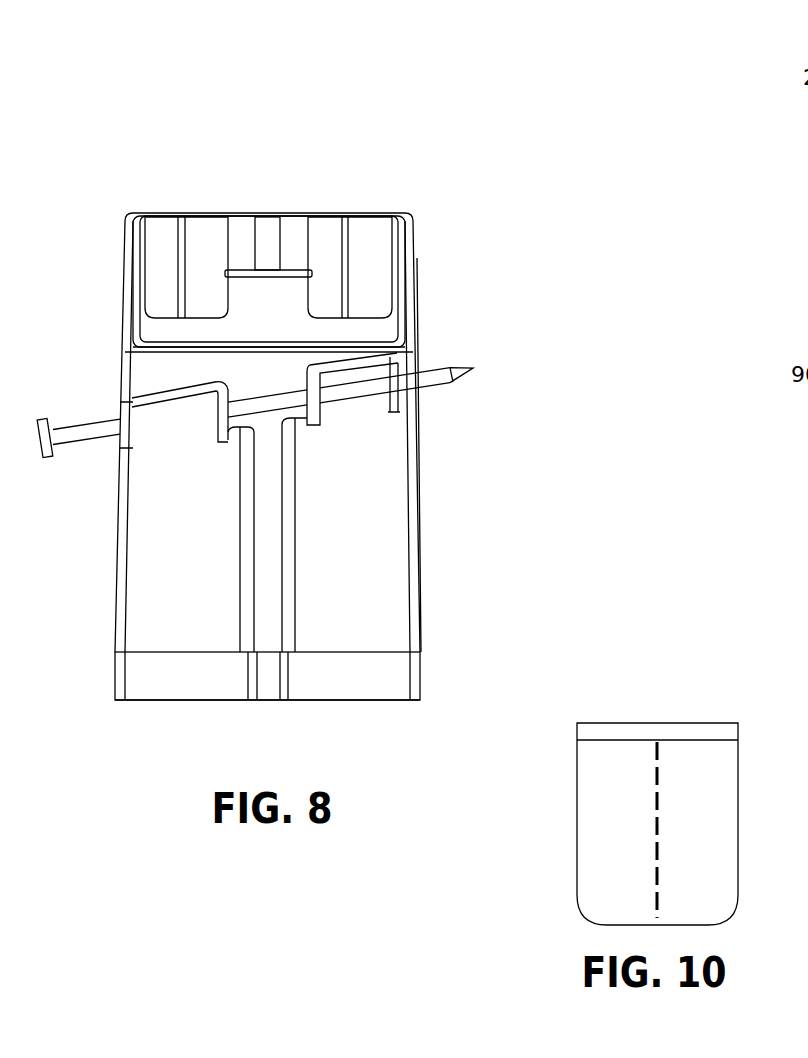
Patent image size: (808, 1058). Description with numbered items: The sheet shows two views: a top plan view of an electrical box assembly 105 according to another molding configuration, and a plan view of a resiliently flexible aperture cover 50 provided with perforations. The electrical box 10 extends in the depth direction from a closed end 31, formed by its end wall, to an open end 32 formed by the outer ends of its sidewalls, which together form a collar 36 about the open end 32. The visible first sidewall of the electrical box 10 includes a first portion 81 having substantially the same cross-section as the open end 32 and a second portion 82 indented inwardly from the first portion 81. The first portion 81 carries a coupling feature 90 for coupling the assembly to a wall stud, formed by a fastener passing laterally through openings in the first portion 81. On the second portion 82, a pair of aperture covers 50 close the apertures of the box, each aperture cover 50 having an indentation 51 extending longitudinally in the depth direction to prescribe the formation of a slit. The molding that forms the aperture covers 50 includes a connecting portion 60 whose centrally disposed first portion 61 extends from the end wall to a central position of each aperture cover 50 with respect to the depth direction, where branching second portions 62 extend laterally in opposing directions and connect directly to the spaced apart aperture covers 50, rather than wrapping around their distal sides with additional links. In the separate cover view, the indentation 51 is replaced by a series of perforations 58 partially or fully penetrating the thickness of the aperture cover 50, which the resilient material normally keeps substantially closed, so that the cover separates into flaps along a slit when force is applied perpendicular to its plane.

In FIG. 8, the electrical box 10 is at (421, 506).
In FIG. 8, the electrical box assembly 105 is at (116, 129).
In FIG. 8, the aperture cover 50 is at (162, 232).
In FIG. 10, the aperture cover 50 is at (616, 744).
In FIG. 8, the indentation 51 is at (182, 227).
In FIG. 8, the first portion 61 is at (265, 232).
In FIG. 8, the connecting portion 60 is at (287, 247).
In FIG. 8, the second portion 82 is at (243, 231).
In FIG. 8, the closed end 31 is at (274, 232).
In FIG. 8, the second portions 62 is at (165, 332).
In FIG. 8, the first portion 81 is at (146, 530).
In FIG. 8, the collar 36 is at (423, 670).
In FIG. 8, the open end 32 is at (158, 700).
In FIG. 8, the coupling feature 90 is at (81, 422).
In FIG. 10, the perforations 58 is at (657, 805).